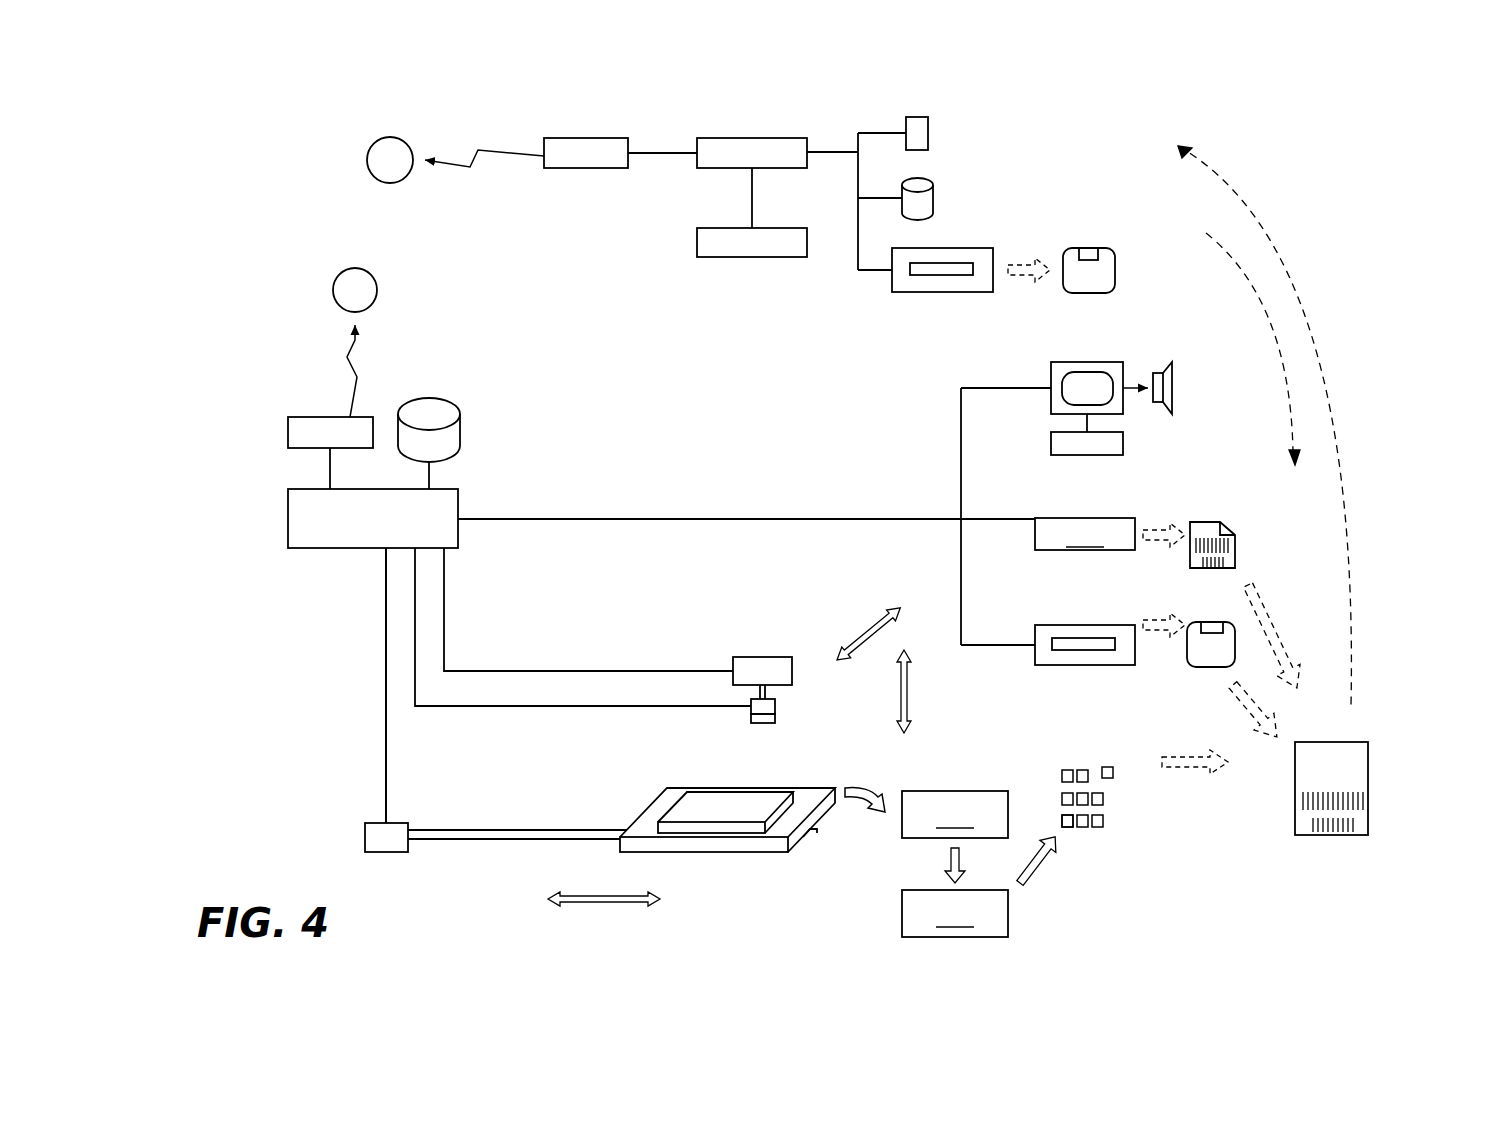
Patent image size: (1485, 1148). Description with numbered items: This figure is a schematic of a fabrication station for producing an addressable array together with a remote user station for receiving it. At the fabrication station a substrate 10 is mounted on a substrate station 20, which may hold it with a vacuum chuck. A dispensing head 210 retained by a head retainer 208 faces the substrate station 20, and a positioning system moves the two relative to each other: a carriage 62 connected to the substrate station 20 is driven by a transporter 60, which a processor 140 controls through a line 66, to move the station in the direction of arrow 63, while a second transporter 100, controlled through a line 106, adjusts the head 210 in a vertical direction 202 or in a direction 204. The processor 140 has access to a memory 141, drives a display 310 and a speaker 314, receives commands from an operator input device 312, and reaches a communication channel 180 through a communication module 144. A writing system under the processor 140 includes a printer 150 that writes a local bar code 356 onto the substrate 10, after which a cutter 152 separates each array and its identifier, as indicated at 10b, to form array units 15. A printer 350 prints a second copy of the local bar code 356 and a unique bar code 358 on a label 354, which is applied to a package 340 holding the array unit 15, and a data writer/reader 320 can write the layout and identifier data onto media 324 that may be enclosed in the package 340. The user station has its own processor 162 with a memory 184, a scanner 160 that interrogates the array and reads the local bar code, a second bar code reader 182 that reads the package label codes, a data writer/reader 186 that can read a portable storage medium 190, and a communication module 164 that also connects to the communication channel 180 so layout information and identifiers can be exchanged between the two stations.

The substrate 10 is at (722, 803).
The separated array portion 10b is at (1095, 840).
The array unit 15 is at (1105, 748).
The substrate station 20 is at (720, 852).
The transporter 60 is at (377, 852).
The carriage 62 is at (555, 840).
The arrow 63 is at (580, 905).
The line 66 is at (387, 780).
The second transporter 100 is at (757, 657).
The line 106 is at (560, 671).
The processor 140 is at (300, 548).
The memory 141 is at (470, 425).
The communication module 144 is at (293, 410).
The printer 150 is at (955, 814).
The cutter 152 is at (955, 913).
The scanner 160 is at (745, 257).
The processor 162 is at (740, 138).
The communication module 164 is at (595, 168).
The communication channel 180 is at (397, 138).
The second bar code reader 182 is at (928, 133).
The memory 184 is at (933, 200).
The data writer/reader 186 is at (958, 292).
The portable storage medium 190 is at (1090, 248).
The vertical direction 202 is at (908, 700).
The direction 204 is at (863, 635).
The head retainer 208 is at (775, 706).
The dispensing head 210 is at (775, 719).
The display 310 is at (1065, 362).
The operator input device 312 is at (1075, 455).
The speaker 314 is at (1172, 378).
The data writer/reader 320 is at (1080, 625).
The media 324 is at (1205, 655).
The package 340 is at (1318, 835).
The printer 350 is at (1085, 534).
The label 354 is at (1205, 522).
The local bar code 356 is at (1217, 568).
The unique bar code 358 is at (1235, 545).